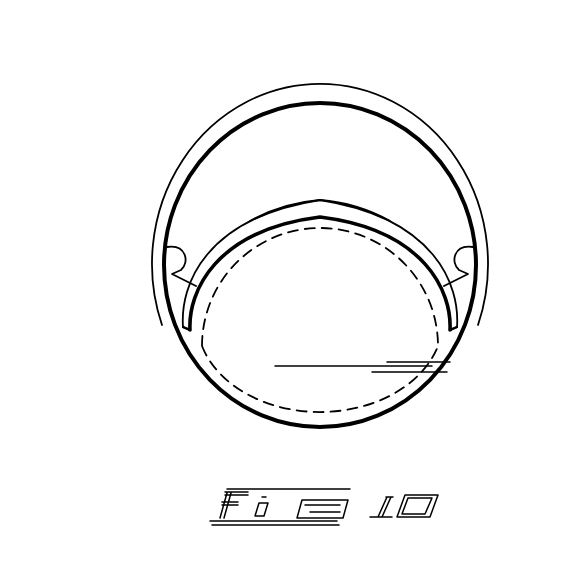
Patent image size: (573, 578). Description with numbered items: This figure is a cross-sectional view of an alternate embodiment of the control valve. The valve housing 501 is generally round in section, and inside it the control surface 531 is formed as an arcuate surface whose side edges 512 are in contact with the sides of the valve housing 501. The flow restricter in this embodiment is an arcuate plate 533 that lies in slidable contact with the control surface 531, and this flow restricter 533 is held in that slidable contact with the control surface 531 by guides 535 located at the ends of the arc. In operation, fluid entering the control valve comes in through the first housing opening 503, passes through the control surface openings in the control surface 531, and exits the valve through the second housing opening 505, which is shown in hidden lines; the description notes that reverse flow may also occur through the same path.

The valve housing 501 is at (403, 103).
The first housing opening 503 is at (247, 184).
The control surface 531 is at (361, 222).
The arcuate plate 533 is at (338, 200).
The guides 535 is at (170, 247).
The side edges 512 is at (181, 323).
The second housing opening 505 is at (250, 348).